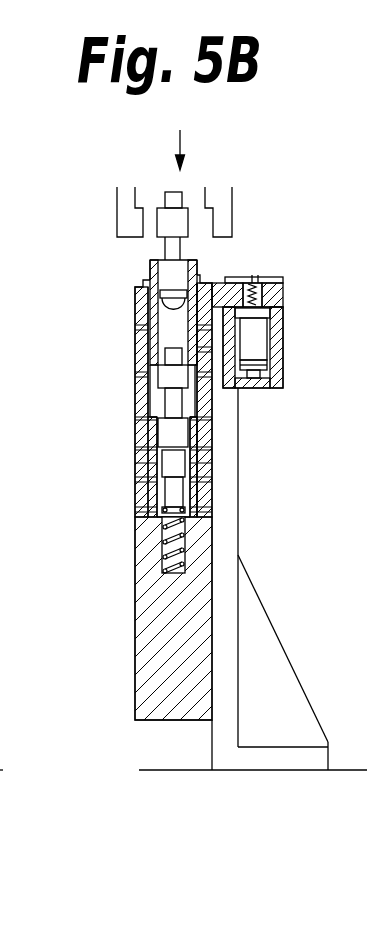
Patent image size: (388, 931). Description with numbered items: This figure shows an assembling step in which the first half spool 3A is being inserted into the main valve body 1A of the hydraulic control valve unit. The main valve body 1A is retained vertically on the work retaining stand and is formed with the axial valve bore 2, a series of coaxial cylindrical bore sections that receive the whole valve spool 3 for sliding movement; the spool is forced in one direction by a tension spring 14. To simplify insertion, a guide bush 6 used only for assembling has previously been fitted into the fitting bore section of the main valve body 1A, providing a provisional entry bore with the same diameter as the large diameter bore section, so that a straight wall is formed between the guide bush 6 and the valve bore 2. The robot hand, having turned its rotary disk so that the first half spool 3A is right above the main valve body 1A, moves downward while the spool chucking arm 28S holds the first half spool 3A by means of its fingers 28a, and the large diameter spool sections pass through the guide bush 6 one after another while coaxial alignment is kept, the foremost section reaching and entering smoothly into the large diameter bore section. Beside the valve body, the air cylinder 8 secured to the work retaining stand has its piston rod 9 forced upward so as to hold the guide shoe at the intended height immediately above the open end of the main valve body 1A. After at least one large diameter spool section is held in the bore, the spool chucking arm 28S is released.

The fingers 28a is at (133, 195).
The spool chucking arm 28S is at (117, 193).
The first half spool 3A is at (187, 208).
The main valve body 1A is at (135, 368).
The guide bush 6 is at (150, 272).
The axial valve bore 2 is at (157, 402).
The valve spool 3 is at (168, 435).
The tension spring 14 is at (160, 540).
The air cylinder 8 is at (274, 347).
The piston rod 9 is at (260, 340).